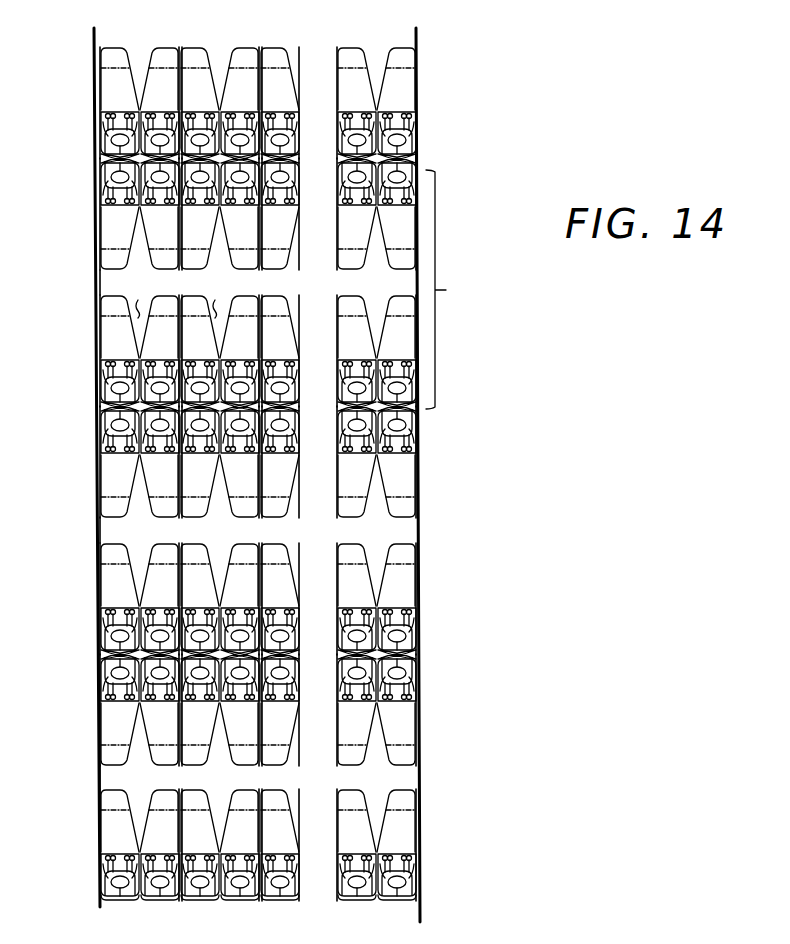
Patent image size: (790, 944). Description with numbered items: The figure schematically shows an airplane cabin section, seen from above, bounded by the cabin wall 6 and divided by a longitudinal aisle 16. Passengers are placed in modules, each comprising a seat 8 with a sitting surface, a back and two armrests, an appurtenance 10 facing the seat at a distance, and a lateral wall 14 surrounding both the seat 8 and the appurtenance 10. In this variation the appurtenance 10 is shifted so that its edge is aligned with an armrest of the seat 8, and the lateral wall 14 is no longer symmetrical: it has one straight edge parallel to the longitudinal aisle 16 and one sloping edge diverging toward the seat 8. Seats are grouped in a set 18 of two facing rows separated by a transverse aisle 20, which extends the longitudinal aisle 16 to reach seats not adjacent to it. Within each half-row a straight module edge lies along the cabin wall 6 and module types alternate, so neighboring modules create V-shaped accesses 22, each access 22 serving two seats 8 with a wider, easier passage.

The cabin wall 6 is at (93, 38).
The seat 8 is at (336, 643).
The appurtenance 10 is at (284, 631).
The lateral wall 14 is at (376, 654).
The longitudinal aisle 16 is at (302, 62).
The set of two rows 18 is at (456, 289).
The transverse aisle 20 is at (96, 290).
The V-shaped access 22 is at (178, 296).